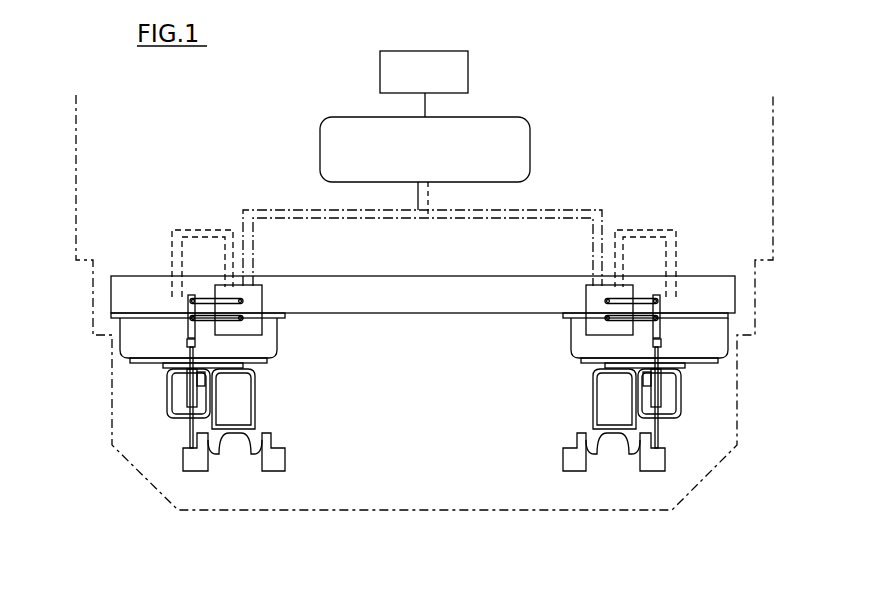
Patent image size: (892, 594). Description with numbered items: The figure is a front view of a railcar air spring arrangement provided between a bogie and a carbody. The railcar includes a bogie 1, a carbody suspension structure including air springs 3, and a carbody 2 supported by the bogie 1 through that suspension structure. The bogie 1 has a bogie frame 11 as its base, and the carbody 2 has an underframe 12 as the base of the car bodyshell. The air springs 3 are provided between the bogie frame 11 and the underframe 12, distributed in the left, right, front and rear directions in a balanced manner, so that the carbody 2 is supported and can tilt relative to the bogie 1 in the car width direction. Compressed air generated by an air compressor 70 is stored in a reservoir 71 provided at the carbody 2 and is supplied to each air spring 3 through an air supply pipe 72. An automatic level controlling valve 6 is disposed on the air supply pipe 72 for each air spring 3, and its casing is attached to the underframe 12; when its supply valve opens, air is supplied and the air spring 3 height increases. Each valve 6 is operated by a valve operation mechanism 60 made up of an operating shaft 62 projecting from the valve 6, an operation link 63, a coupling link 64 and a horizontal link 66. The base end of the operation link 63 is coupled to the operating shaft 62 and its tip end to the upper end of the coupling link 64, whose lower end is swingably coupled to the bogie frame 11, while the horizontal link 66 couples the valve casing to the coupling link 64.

The bogie 1 is at (684, 418).
The carbody 2 is at (711, 267).
The air spring 3 is at (277, 343).
The automatic level controlling valve 6 is at (222, 285).
The bogie frame 11 is at (590, 400).
The underframe 12 is at (735, 295).
The valve operation mechanism 60 is at (172, 332).
The operating shaft 62 is at (243, 300).
The operation link 63 is at (200, 297).
The coupling link 64 is at (190, 425).
The horizontal link 66 is at (188, 345).
The air compressor 70 is at (468, 72).
The reservoir 71 is at (530, 148).
The air supply pipe 72 is at (205, 228).